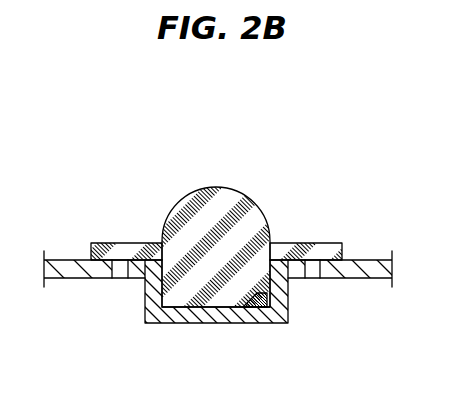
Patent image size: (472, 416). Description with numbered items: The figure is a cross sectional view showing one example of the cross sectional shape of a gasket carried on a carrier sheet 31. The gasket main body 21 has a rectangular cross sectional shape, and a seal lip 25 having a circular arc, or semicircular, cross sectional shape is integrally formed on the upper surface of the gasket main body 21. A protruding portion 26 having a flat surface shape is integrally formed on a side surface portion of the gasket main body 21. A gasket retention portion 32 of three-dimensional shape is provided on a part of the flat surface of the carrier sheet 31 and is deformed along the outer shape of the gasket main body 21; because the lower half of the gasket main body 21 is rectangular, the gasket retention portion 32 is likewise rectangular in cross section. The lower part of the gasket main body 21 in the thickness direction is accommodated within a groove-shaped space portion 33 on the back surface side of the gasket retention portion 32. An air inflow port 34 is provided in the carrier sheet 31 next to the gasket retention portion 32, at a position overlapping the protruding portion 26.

The gasket main body 21 is at (235, 251).
The seal lip 25 is at (207, 185).
The protruding portion 26 is at (113, 244).
The carrier sheet 31 is at (370, 262).
The gasket retention portion 32 is at (190, 323).
The space portion 33 is at (262, 323).
The air inflow port 34 is at (118, 269).